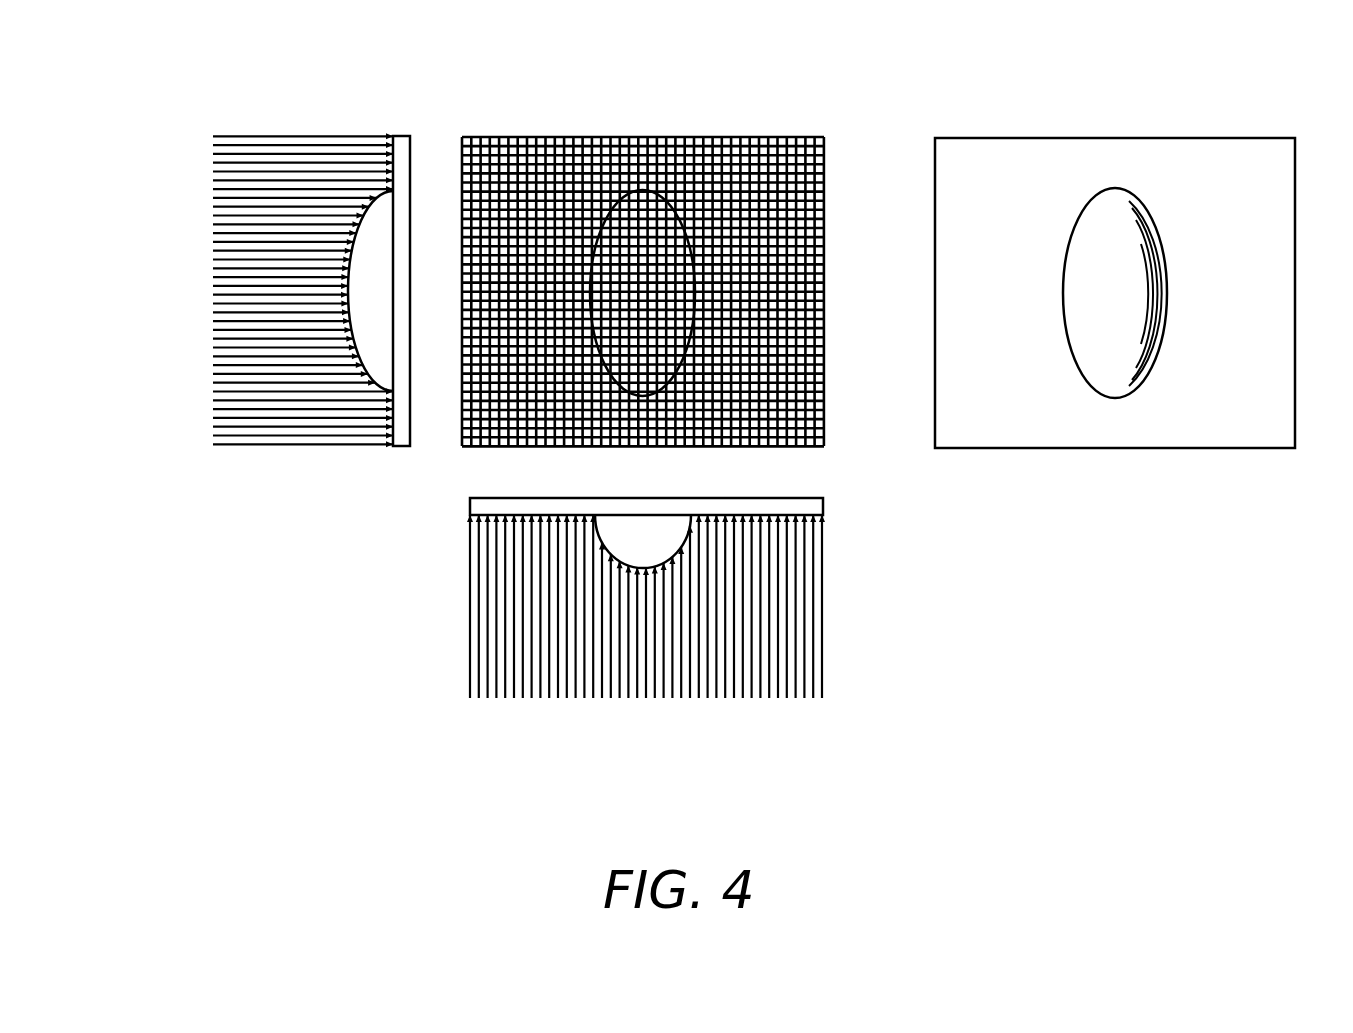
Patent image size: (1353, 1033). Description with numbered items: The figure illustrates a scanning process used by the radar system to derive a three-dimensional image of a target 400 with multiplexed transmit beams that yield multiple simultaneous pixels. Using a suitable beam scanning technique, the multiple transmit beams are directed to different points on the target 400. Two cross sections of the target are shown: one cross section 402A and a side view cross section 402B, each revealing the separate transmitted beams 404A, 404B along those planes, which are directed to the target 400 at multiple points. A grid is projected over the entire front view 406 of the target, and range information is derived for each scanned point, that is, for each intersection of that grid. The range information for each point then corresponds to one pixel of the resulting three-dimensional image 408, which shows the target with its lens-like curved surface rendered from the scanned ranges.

The target 400 is at (597, 337).
The lens cross-section (side view) 402A is at (600, 522).
The side view cross section 402B is at (370, 345).
The transmitted beam 404A is at (727, 705).
The transmitted beam 404B is at (233, 455).
The front view 406 is at (728, 112).
The three-dimensional image 408 is at (1193, 113).